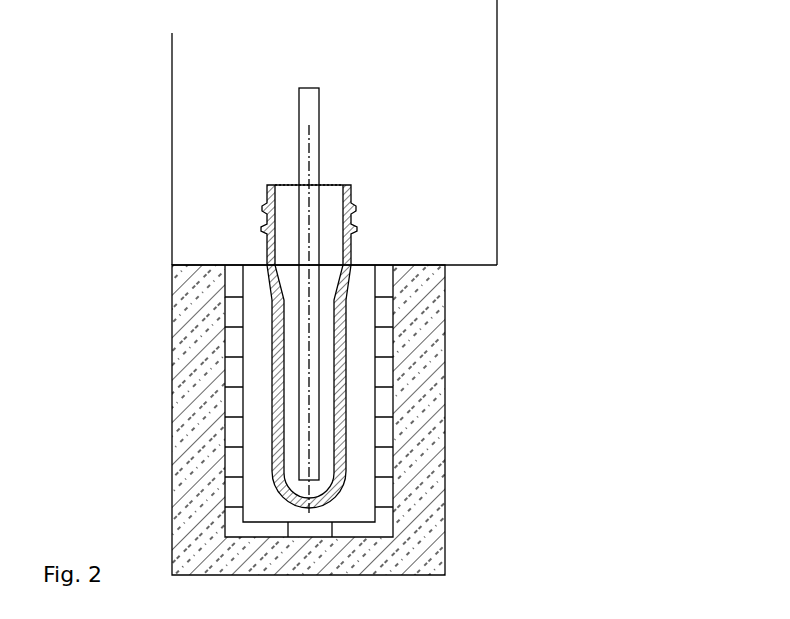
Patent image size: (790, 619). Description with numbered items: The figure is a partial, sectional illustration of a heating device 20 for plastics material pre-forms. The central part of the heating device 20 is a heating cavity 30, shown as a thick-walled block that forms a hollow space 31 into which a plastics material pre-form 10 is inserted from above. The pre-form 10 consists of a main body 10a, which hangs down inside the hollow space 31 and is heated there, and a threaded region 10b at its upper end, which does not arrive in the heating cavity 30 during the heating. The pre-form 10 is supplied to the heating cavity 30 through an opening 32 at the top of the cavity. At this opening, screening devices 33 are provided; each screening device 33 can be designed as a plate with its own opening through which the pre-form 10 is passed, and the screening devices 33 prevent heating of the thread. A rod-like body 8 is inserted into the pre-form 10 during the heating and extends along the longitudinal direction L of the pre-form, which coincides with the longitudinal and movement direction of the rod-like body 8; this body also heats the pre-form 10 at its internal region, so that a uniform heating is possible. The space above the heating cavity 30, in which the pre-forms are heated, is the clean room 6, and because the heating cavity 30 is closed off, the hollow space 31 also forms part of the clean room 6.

The clean room 6 is at (410, 107).
The rod-like body 8 is at (305, 158).
The plastics material pre-form 10 is at (408, 312).
The main body 10a is at (345, 440).
The threaded region 10b is at (355, 212).
The heating device 20 is at (558, 258).
The heating cavity 30 is at (457, 455).
The hollow space 31 is at (257, 463).
The opening 32 is at (360, 263).
The screening device 33 is at (416, 236).
The longitudinal direction L is at (307, 265).